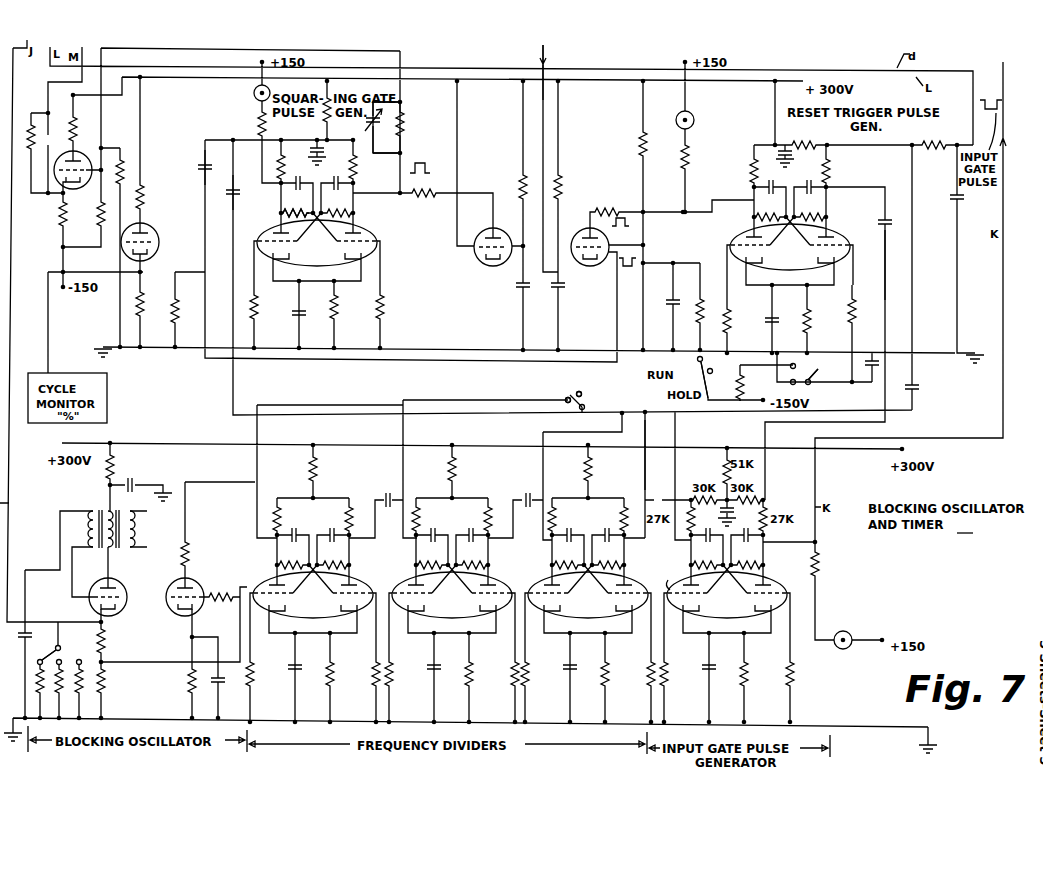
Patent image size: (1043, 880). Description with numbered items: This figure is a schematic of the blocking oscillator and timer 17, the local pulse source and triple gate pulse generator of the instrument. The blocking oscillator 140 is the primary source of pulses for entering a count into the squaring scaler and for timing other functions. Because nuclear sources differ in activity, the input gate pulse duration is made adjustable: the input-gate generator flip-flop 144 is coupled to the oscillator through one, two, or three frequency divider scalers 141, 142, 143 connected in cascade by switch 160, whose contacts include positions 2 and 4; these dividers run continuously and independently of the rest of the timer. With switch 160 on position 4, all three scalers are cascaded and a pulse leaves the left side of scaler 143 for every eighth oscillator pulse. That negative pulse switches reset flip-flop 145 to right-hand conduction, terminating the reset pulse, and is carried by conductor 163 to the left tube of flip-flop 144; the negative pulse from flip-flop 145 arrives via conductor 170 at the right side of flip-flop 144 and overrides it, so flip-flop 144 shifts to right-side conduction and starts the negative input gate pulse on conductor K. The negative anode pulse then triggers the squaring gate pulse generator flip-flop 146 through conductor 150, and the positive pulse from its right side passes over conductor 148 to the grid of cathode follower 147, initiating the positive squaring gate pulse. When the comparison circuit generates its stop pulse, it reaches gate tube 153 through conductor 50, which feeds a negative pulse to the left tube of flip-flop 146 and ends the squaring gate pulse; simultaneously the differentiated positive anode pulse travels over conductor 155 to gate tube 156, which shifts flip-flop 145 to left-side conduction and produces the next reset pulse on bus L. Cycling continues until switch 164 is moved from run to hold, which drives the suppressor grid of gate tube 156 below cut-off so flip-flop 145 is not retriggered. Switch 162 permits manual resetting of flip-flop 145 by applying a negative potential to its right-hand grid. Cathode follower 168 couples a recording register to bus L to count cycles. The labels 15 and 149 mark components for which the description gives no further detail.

The switch contact 2 is at (564, 395).
The switch position 4 is at (584, 386).
The input gate pulse generator 15 is at (674, 578).
The blocking oscillator and timer 17 is at (966, 526).
The conductor 50 is at (549, 62).
The blocking oscillator 140 is at (146, 581).
The frequency divider scaler 141 is at (322, 611).
The frequency divider scaler 142 is at (462, 611).
The frequency divider scaler 143 is at (599, 611).
The input-gate generator flip-flop 144 is at (737, 611).
The reset flip-flop 145 is at (800, 268).
The squaring gate pulse generator flip-flop 146 is at (328, 261).
The cathode follower 147 is at (66, 191).
The conductor 148 is at (402, 149).
The resistor 149 is at (280, 217).
The conductor 150 is at (225, 200).
The gate tube 153 is at (496, 230).
The conductor 155 is at (205, 198).
The gate tube 156 is at (590, 212).
The switch 160 is at (590, 391).
The switch 162 is at (817, 386).
The conductor 163 is at (642, 474).
The switch 164 is at (702, 358).
The cathode follower 168 is at (141, 209).
The conductor 170 is at (885, 281).